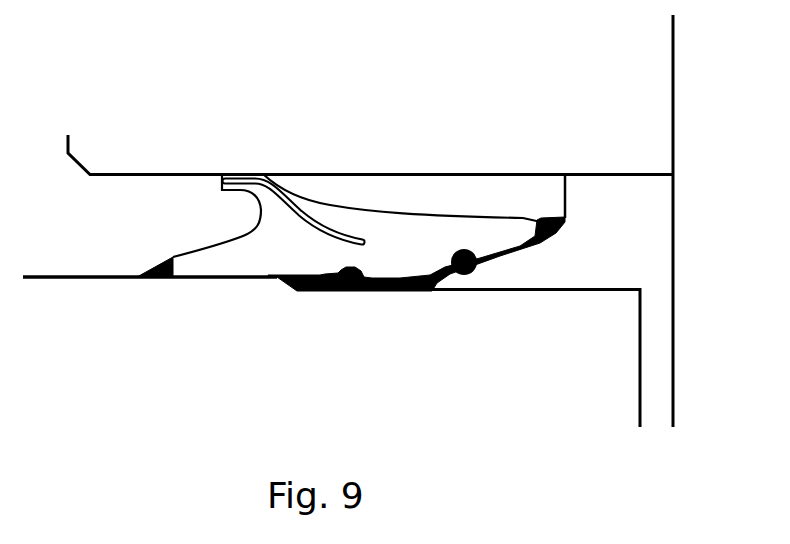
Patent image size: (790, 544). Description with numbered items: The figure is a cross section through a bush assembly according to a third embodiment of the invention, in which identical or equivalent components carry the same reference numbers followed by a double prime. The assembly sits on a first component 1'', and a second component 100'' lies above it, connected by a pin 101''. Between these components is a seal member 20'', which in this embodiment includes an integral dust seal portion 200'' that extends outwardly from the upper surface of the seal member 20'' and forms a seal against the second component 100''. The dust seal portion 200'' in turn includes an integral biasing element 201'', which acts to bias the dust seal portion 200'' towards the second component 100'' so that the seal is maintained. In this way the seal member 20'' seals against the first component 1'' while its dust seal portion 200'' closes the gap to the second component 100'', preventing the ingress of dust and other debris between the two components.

The component 1'' is at (331, 352).
The seal member 20'' is at (397, 316).
The second component 100'' is at (370, 153).
The pin 101'' is at (636, 220).
The dust seal portion 200'' is at (339, 183).
The biasing element 201'' is at (222, 270).